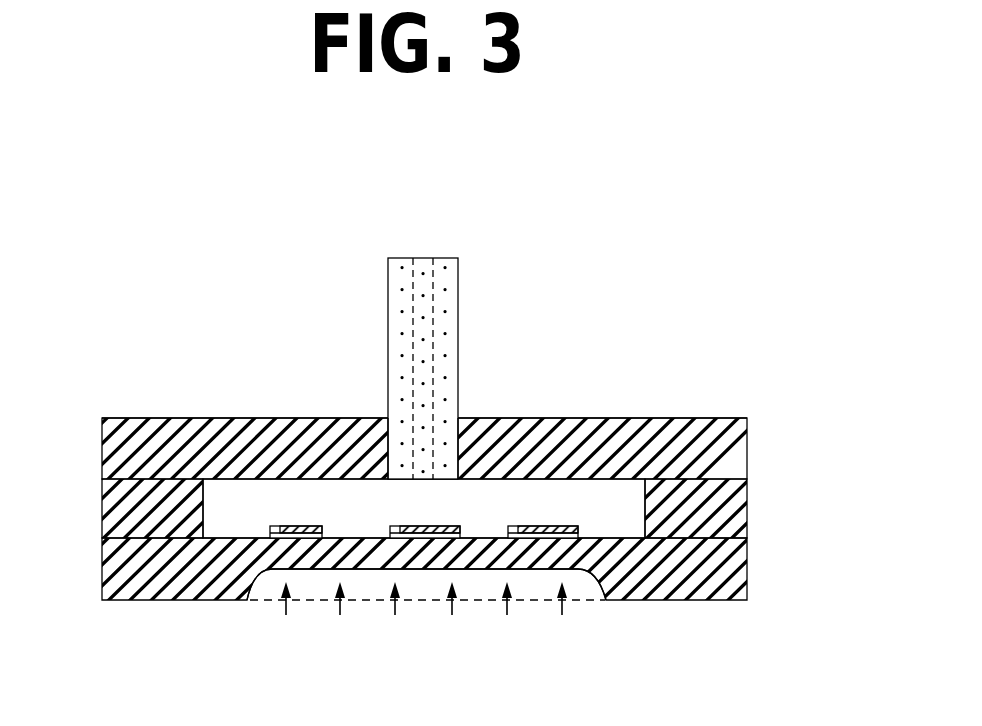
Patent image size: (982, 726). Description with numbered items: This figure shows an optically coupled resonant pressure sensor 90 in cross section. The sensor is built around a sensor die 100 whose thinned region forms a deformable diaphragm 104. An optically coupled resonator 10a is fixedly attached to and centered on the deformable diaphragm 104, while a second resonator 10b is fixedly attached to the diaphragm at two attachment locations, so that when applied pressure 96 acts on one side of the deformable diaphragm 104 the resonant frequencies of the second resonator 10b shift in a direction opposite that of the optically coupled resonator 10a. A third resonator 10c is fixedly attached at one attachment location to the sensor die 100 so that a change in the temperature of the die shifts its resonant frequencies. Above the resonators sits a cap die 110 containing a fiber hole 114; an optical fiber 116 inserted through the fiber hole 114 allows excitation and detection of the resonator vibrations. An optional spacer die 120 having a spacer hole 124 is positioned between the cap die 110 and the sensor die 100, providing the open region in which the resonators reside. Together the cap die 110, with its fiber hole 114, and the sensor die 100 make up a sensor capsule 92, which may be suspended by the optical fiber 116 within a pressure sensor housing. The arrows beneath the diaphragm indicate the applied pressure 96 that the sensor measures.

The optically coupled resonant pressure sensor 90 is at (162, 289).
The sensor capsule 92 is at (185, 418).
The optically coupled resonator 10a is at (397, 526).
The second resonator 10b is at (543, 526).
The third resonator 10c is at (302, 526).
The optical fiber 116 is at (458, 308).
The fiber hole 114 is at (490, 418).
The spacer hole 124 is at (615, 485).
The cap die 110 is at (747, 458).
The spacer die 120 is at (747, 495).
The sensor die 100 is at (747, 567).
The applied pressure 96 is at (452, 608).
The deformable diaphragm 104 is at (533, 570).